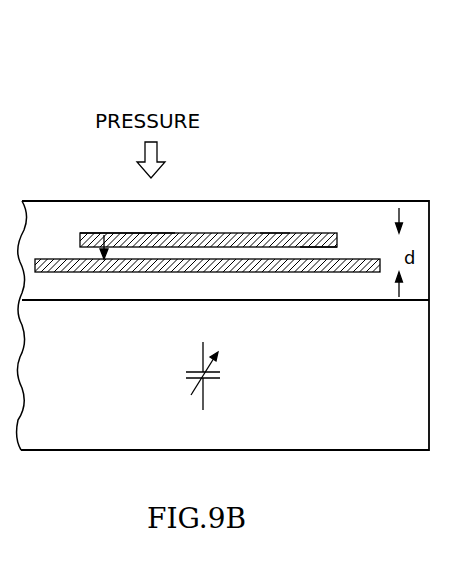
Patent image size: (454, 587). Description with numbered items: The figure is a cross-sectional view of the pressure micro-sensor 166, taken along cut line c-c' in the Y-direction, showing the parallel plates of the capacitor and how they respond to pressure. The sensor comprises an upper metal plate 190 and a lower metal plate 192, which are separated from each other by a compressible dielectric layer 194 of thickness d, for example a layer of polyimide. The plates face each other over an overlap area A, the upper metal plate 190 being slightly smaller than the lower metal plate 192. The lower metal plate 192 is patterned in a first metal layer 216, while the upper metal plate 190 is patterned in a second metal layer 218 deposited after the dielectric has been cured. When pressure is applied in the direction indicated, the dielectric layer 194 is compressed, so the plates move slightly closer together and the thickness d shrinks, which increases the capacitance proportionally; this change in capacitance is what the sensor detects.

The pressure micro-sensor 166 is at (349, 122).
The upper metal plate 190 is at (215, 240).
The lower metal plate 192 is at (194, 272).
The compressible dielectric layer 194 is at (321, 250).
The first metal layer 216 is at (355, 272).
The second metal layer 218 is at (172, 240).
The overlap area A is at (275, 240).